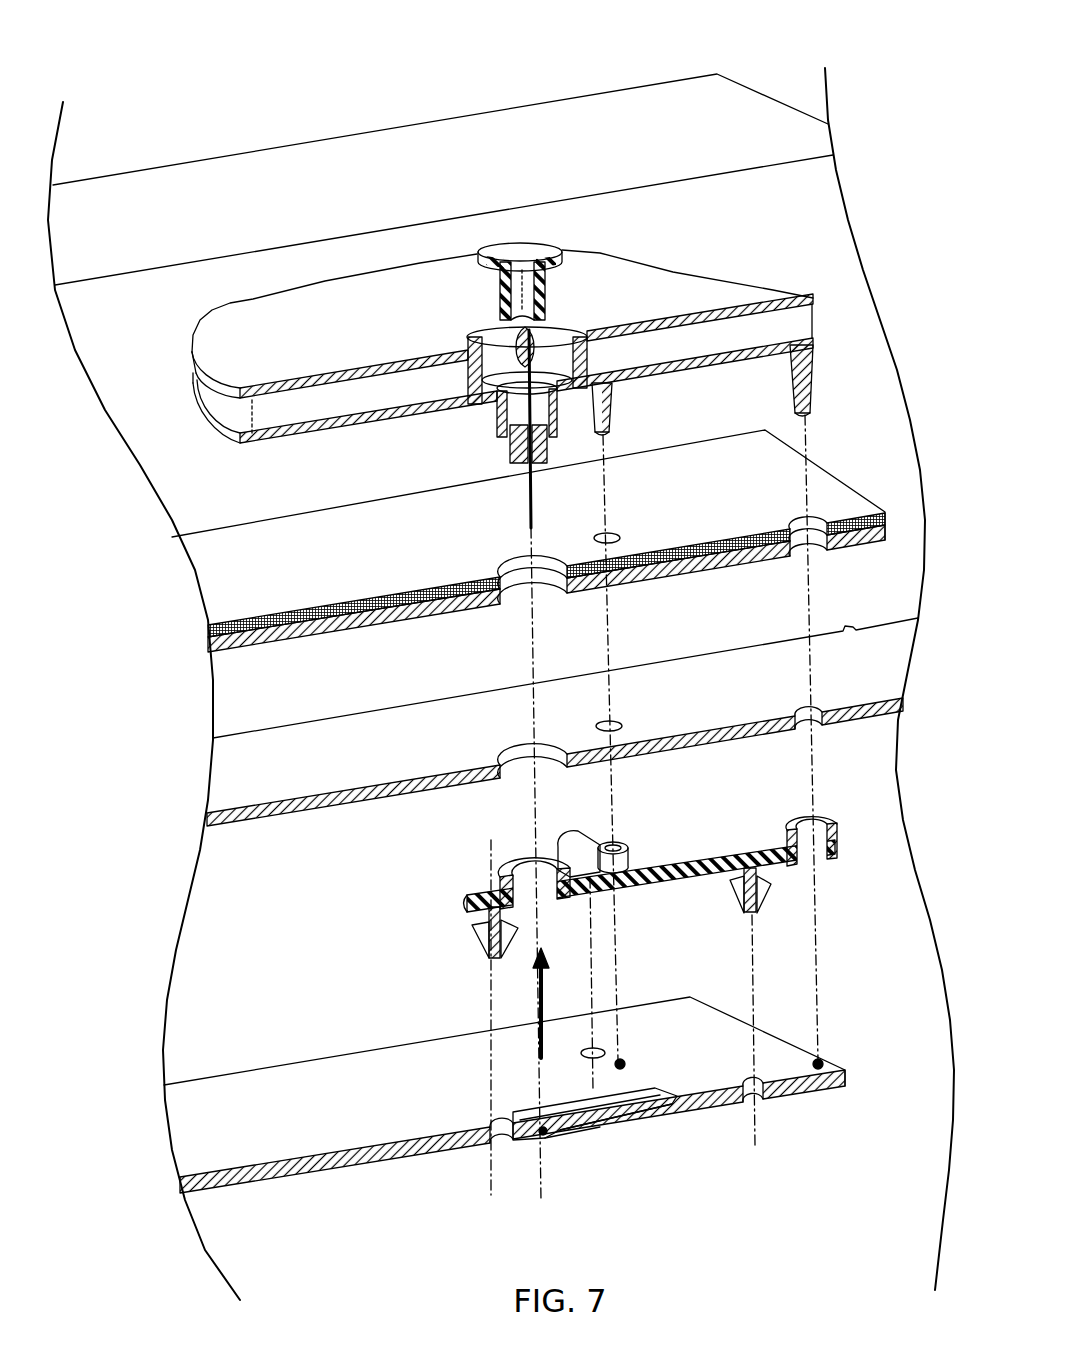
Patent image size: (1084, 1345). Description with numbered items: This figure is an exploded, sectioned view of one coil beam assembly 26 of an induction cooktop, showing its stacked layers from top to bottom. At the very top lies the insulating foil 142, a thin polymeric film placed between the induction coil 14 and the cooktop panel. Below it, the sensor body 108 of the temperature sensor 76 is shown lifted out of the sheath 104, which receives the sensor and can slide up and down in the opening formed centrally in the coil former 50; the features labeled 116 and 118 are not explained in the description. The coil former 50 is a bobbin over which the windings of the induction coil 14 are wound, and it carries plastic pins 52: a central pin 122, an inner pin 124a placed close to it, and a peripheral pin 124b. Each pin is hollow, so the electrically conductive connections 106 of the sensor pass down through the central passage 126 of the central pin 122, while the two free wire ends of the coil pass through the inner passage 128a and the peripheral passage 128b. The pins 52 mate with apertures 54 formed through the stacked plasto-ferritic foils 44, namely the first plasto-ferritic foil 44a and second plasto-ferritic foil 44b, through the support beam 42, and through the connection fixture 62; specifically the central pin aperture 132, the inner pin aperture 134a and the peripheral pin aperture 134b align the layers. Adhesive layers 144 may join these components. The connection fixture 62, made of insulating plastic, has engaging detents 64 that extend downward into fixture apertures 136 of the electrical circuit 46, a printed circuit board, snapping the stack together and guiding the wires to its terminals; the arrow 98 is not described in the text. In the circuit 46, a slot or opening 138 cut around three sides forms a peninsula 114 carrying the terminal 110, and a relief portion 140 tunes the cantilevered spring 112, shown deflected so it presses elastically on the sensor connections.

The induction coil 14 is at (501, 668).
The coil beam assembly 26 is at (266, 94).
The insulating foil 142 is at (443, 167).
The temperature sensor 76 is at (484, 222).
The pin head 116 is at (517, 250).
The sheath 104 is at (563, 225).
The coil former 50 is at (527, 329).
The adhesive layers 144 is at (318, 313).
The disc top surface 118 is at (245, 350).
The sensor body 108 is at (515, 355).
The inner pin 124a is at (614, 388).
The peripheral pin 124b is at (815, 365).
The plastic pins 52 is at (744, 394).
The central passage 126 is at (510, 455).
The inner passage 128a is at (612, 428).
The peripheral passage 128b is at (818, 413).
The electrically conductive connections 106 is at (525, 480).
The central pin 122 is at (552, 440).
The apertures 54 is at (613, 687).
The central pin aperture 132 is at (515, 563).
The inner pin aperture 134a is at (608, 533).
The peripheral pin aperture 134b is at (805, 828).
The plasto-ferritic foils 44 is at (528, 541).
The first plasto-ferritic foil 44a is at (380, 617).
The second plasto-ferritic foil 44b is at (400, 597).
The support beam 42 is at (320, 760).
The connection fixture 62 is at (618, 876).
The engaging detents 64 is at (567, 838).
The assembly direction arrow 98 is at (548, 990).
The electrical circuit 46 is at (504, 1124).
The peninsula 114 is at (571, 1177).
The fixture apertures 136 is at (604, 1046).
The slot or opening 138 is at (560, 1106).
The relief portion 140 is at (626, 1103).
The terminal 110 is at (599, 1121).
The cantilevered spring 112 is at (640, 1130).